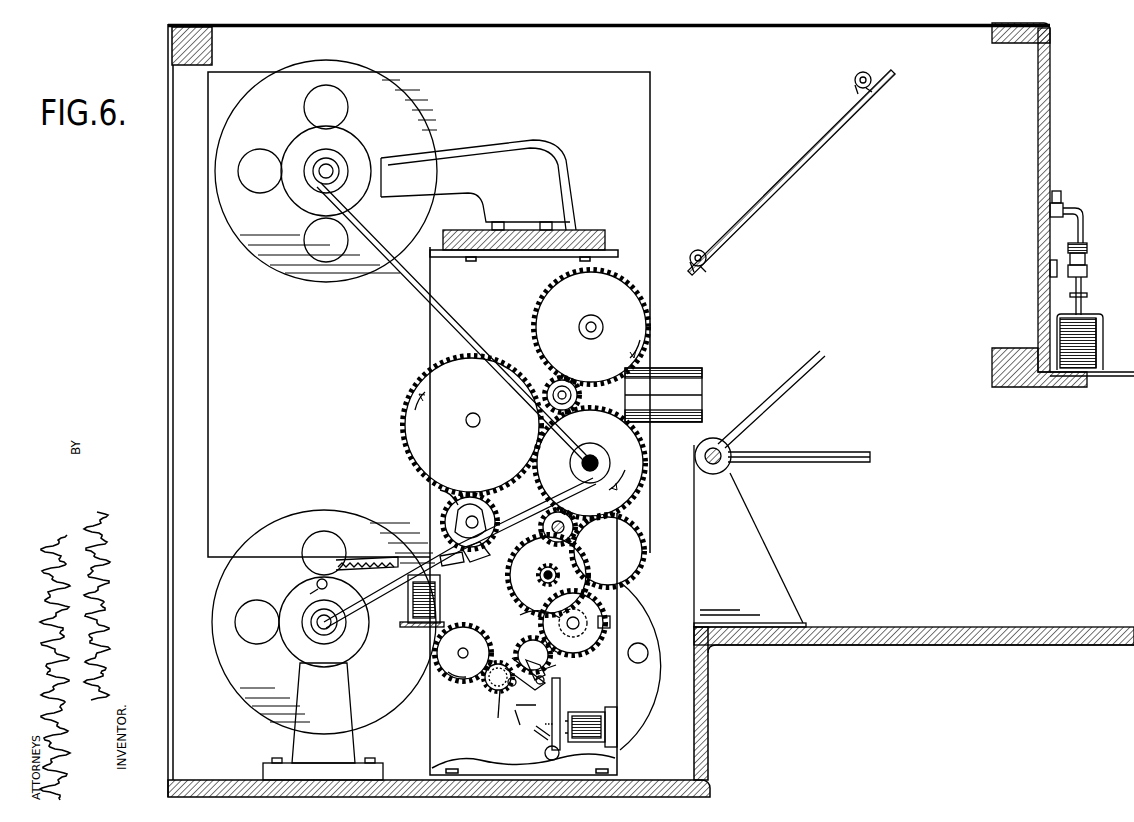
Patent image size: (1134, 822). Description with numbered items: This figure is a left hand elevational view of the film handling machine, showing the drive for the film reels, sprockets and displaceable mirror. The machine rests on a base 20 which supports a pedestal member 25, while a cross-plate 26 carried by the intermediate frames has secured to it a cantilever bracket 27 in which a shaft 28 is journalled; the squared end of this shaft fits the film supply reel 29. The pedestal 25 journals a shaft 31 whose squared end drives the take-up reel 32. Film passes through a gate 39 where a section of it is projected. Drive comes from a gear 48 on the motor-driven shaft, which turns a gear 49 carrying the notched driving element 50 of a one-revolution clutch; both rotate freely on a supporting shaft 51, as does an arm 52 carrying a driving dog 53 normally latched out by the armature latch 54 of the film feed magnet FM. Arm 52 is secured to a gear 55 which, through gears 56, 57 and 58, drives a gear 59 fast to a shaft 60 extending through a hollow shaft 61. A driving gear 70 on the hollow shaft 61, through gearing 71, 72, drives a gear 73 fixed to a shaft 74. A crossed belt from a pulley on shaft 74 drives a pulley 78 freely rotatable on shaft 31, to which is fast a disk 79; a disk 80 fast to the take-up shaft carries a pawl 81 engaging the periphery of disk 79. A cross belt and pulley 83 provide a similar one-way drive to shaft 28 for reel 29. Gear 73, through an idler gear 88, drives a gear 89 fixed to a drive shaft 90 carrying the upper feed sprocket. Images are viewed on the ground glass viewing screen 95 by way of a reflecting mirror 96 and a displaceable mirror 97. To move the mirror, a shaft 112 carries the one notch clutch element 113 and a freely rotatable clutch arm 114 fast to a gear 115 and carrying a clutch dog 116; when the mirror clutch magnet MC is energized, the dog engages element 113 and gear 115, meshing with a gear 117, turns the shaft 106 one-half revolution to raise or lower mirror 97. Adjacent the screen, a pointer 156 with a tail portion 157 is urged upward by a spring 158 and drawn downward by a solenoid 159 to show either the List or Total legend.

The base 20 is at (780, 632).
The pedestal member 25 is at (310, 740).
The cross-plate 26 is at (586, 240).
The cantilever bracket 27 is at (538, 166).
The shaft 28 is at (332, 167).
The film supply reel 29 is at (270, 262).
The shaft 31 is at (320, 624).
The take-up reel 32 is at (240, 684).
The gate 39 is at (640, 380).
The gear 48 is at (450, 678).
The gear 49 is at (490, 690).
The notched driving element 50 is at (515, 660).
The supporting shaft 51 is at (497, 700).
The arm 52 is at (535, 686).
The driving dog 53 is at (553, 675).
The armature latch 54 is at (562, 700).
The gear 55 is at (518, 712).
The gear 56 is at (548, 664).
The gear 57 is at (598, 627).
The gear 58 is at (590, 612).
The gear 59 is at (578, 585).
The shaft 60 is at (538, 578).
The hollow shaft 61 is at (540, 582).
The driving gear 70 is at (535, 612).
The gearing 71 is at (583, 533).
The gearing 72 is at (566, 520).
The gear 73 is at (632, 473).
The shaft 74 is at (594, 460).
The pulley 78 is at (312, 612).
The disk 79 is at (313, 617).
The disk 80 is at (352, 652).
The pawl 81 is at (320, 580).
The pulley 83 is at (312, 180).
The idler gear 88 is at (548, 384).
The gear 89 is at (548, 314).
The drive shaft 90 is at (600, 325).
The ground glass viewing screen 95 is at (1050, 133).
The reflecting mirror 96 is at (762, 210).
The displaceable mirror 97 is at (802, 452).
The shaft 106 is at (466, 424).
The shaft 112 is at (448, 518).
The one notch clutch element 113 is at (476, 500).
The clutch arm 114 is at (452, 562).
The gear 115 is at (447, 490).
The clutch dog 116 is at (486, 556).
The gear 117 is at (410, 394).
The pointer 156 is at (1050, 210).
The tail portion 157 is at (1066, 208).
The spring 158 is at (1068, 255).
The solenoid 159 is at (1068, 338).
The mirror clutch magnet MC is at (440, 598).
The film feed magnet FM is at (598, 727).